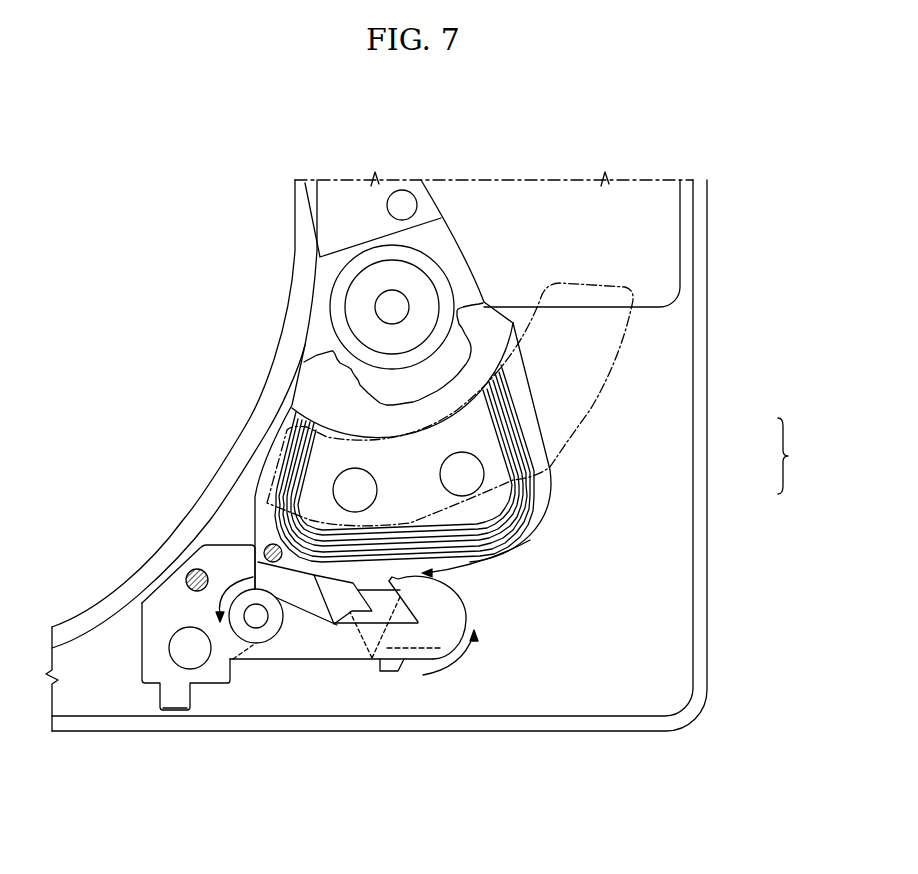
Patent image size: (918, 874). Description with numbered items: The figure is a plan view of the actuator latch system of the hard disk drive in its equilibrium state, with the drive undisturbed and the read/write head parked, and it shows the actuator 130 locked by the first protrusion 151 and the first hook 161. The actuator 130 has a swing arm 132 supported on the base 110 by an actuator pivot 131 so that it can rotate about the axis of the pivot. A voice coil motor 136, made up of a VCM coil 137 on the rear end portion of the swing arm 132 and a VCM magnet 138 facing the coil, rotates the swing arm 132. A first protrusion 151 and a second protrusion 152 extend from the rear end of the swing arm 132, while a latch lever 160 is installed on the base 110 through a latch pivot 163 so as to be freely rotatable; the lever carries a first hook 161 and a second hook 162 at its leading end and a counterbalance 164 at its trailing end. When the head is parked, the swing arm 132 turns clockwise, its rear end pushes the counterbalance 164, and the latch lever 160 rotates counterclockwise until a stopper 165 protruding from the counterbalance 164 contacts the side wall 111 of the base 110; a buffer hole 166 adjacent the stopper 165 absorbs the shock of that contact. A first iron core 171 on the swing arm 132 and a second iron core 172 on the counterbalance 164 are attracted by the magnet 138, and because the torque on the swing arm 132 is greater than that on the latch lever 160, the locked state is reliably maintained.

The base 110 is at (664, 558).
The side wall 111 is at (702, 634).
The actuator 130 is at (486, 256).
The actuator pivot 131 is at (378, 305).
The swing arm 132 is at (297, 414).
The voice coil motor 136 is at (802, 456).
The VCM coil 137 is at (552, 498).
The VCM magnet 138 is at (588, 418).
The first protrusion 151 is at (372, 660).
The second protrusion 152 is at (338, 603).
The latch lever 160 is at (299, 678).
The first hook 161 is at (393, 669).
The second hook 162 is at (447, 610).
The latch pivot 163 is at (257, 622).
The counterbalance 164 is at (160, 618).
The stopper 165 is at (177, 710).
The buffer hole 166 is at (198, 665).
The first iron core 171 is at (266, 547).
The second iron core 172 is at (190, 572).